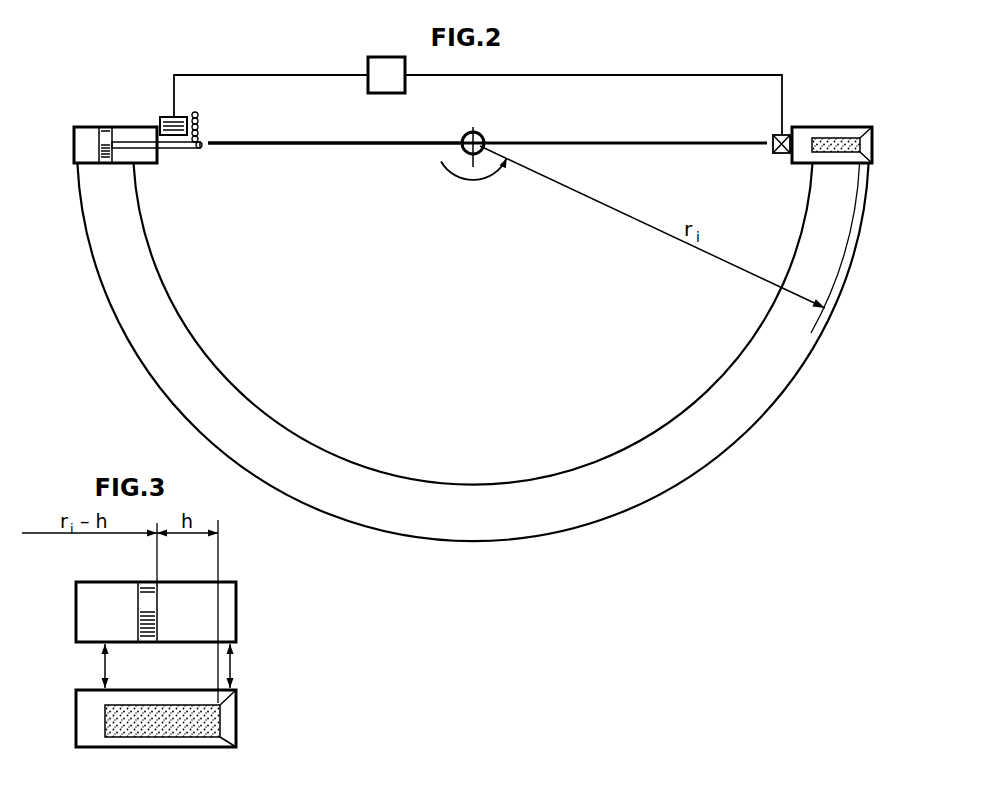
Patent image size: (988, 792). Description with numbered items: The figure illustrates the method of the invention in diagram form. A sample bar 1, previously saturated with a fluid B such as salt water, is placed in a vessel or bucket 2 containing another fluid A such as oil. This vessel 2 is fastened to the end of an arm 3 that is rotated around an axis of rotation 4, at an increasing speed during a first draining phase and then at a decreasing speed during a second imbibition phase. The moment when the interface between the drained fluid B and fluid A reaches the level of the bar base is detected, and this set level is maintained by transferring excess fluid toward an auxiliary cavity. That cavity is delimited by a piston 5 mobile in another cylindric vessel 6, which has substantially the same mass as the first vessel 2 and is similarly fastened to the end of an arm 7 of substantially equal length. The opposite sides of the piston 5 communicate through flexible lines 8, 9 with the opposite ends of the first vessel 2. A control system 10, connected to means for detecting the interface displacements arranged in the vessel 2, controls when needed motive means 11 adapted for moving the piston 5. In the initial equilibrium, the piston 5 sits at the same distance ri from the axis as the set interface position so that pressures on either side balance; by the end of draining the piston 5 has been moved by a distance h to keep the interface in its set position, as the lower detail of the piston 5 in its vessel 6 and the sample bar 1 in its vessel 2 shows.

In FIG. 2, the sample bar 1 is at (825, 140).
In FIG. 3, the sample bar 1 is at (110, 717).
In FIG. 2, the vessel or bucket 2 is at (855, 120).
In FIG. 3, the vessel or bucket 2 is at (248, 725).
In FIG. 2, the arm 3 is at (638, 145).
In FIG. 2, the axis of rotation 4 is at (463, 132).
In FIG. 2, the piston 5 is at (104, 128).
In FIG. 3, the piston 5 is at (143, 603).
In FIG. 2, the cylindric vessel 6 is at (78, 118).
In FIG. 3, the cylindric vessel 6 is at (245, 609).
In FIG. 2, the arm 7 is at (358, 145).
In FIG. 2, the flexible line 8 is at (457, 541).
In FIG. 2, the flexible line 9 is at (507, 485).
In FIG. 2, the control system 10 is at (376, 88).
In FIG. 2, the motive means 11 is at (212, 118).